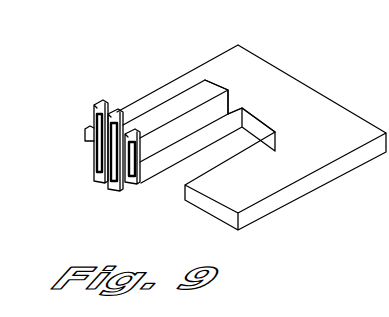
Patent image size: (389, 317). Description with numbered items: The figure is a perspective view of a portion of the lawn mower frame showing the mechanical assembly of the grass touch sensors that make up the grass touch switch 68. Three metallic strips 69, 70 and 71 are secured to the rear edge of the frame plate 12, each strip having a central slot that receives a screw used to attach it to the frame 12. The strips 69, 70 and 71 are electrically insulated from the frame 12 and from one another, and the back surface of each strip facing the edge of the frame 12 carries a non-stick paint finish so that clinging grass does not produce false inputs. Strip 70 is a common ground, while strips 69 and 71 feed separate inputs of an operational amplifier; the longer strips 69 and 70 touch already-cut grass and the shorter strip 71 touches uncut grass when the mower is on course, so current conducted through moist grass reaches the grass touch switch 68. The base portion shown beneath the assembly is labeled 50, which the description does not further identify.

The frame plate 12 is at (180, 82).
The base plate 50 is at (200, 162).
The grass touch switch 68 is at (204, 88).
The metallic strip 69 is at (98, 102).
The metallic strip 70 is at (116, 112).
The metallic strip 71 is at (135, 187).